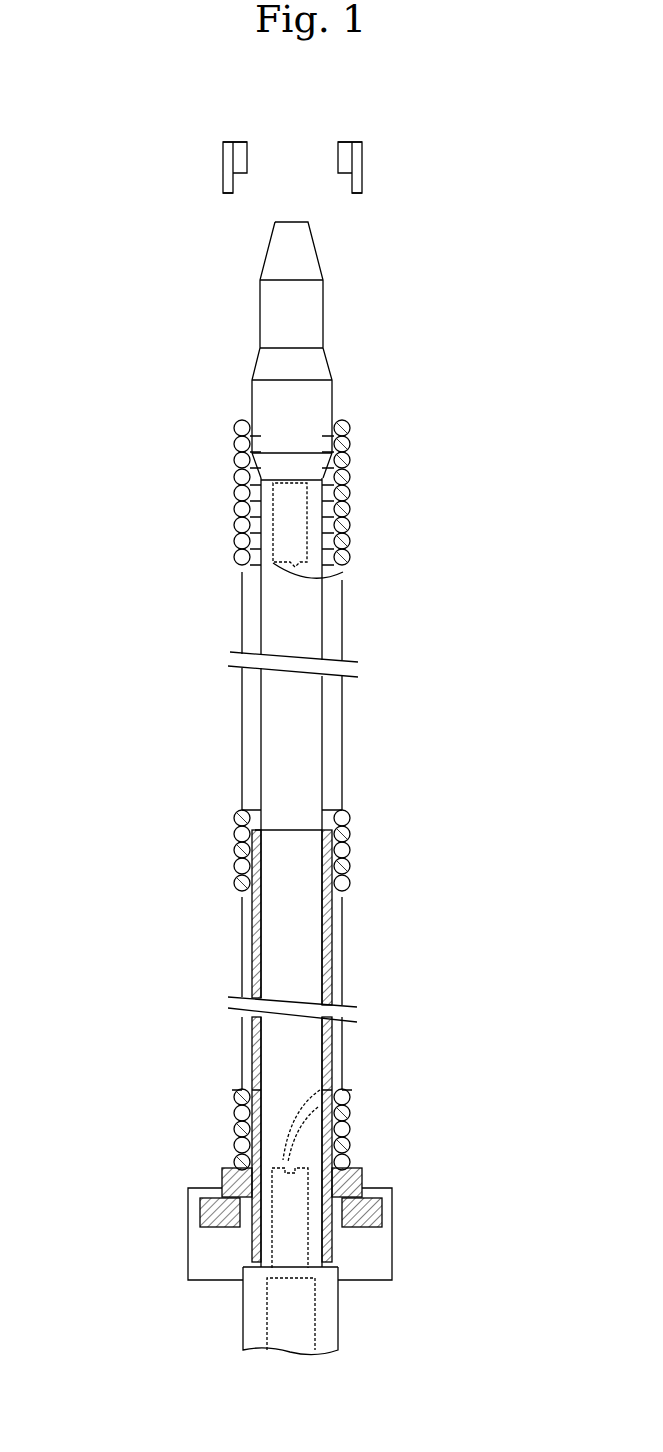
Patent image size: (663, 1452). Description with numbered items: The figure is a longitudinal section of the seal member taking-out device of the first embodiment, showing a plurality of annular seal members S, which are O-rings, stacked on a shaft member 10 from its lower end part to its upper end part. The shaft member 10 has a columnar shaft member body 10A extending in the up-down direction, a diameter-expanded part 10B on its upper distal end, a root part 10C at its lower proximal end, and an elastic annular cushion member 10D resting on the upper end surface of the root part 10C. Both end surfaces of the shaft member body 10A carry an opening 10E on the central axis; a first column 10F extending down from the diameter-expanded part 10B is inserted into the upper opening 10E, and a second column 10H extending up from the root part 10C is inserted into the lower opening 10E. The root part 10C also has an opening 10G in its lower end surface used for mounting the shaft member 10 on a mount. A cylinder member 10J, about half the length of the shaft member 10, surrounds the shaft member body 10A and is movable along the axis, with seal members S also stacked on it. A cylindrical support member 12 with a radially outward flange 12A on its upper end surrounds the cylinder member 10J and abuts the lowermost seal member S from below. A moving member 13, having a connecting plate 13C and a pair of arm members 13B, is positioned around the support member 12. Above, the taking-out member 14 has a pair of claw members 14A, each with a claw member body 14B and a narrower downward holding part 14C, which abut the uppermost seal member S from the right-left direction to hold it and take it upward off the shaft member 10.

The shaft member 10 is at (425, 578).
The shaft member body 10A is at (305, 613).
The diameter-expanded part 10B is at (333, 341).
The root part 10C is at (328, 1320).
The cushion member 10D is at (330, 1266).
The opening 10E is at (350, 568).
The first column 10F is at (290, 507).
The opening 10G is at (312, 1350).
The second column 10H is at (320, 1090).
The cylinder member 10J is at (340, 897).
The support member 12 is at (216, 1158).
The flange 12A is at (222, 1176).
The moving member 13 is at (82, 1220).
The arm member 13B is at (372, 1228).
The connecting plate 13C is at (190, 1252).
The taking-out member 14 is at (372, 130).
The claw member 14A is at (222, 159).
The claw member body 14B is at (338, 150).
The holding part 14C is at (357, 195).
The seal member S is at (236, 557).